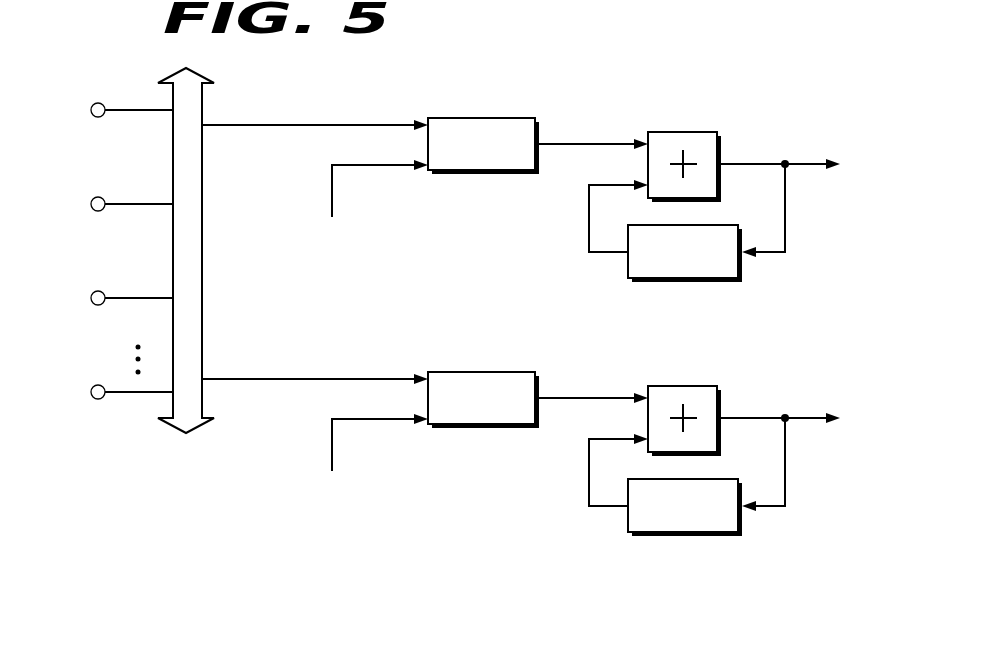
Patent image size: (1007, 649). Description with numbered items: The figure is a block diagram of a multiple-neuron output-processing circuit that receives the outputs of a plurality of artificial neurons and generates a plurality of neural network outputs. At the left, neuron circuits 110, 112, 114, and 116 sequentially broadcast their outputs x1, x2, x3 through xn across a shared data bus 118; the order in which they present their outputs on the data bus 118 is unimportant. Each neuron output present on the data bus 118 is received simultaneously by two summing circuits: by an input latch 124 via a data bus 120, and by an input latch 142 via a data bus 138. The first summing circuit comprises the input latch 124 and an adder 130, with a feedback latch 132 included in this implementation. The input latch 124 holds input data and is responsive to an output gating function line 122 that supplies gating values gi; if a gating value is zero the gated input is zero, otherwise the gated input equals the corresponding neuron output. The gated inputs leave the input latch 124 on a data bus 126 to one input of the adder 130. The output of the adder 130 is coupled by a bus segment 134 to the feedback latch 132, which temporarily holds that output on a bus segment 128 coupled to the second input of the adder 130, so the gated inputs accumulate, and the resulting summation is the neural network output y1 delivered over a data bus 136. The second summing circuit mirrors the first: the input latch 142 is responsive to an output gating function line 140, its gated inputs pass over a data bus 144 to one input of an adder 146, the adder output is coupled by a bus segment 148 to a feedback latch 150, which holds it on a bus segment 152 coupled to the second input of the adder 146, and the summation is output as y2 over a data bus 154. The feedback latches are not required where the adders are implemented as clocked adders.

The neuron circuit 110 is at (98, 103).
The neuron circuit 112 is at (98, 197).
The neuron circuit 114 is at (98, 291).
The neuron circuit 116 is at (98, 385).
The data bus 118 is at (202, 325).
The data bus 120 is at (316, 124).
The output gating function line 122 is at (332, 188).
The input latch 124 is at (471, 117).
The data bus 126 is at (590, 143).
The bus segment 128 is at (589, 213).
The adder 130 is at (690, 131).
The feedback latch 132 is at (667, 280).
The bus segment 134 is at (785, 213).
The data bus 136 is at (808, 163).
The data bus 138 is at (316, 378).
The output gating function line 140 is at (332, 442).
The input latch 142 is at (471, 371).
The data bus 144 is at (590, 397).
The adder 146 is at (690, 385).
The bus segment 148 is at (785, 467).
The feedback latch 150 is at (667, 534).
The bus segment 152 is at (589, 467).
The data bus 154 is at (808, 417).